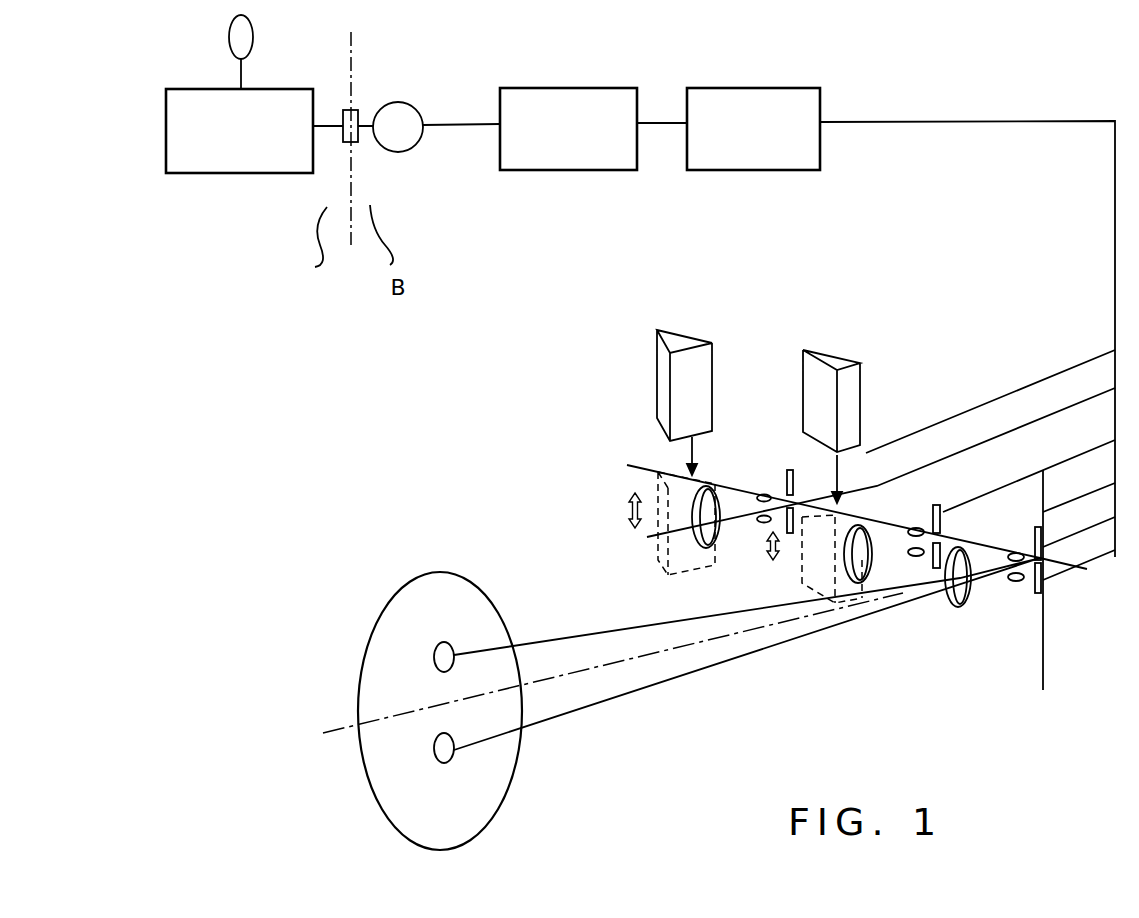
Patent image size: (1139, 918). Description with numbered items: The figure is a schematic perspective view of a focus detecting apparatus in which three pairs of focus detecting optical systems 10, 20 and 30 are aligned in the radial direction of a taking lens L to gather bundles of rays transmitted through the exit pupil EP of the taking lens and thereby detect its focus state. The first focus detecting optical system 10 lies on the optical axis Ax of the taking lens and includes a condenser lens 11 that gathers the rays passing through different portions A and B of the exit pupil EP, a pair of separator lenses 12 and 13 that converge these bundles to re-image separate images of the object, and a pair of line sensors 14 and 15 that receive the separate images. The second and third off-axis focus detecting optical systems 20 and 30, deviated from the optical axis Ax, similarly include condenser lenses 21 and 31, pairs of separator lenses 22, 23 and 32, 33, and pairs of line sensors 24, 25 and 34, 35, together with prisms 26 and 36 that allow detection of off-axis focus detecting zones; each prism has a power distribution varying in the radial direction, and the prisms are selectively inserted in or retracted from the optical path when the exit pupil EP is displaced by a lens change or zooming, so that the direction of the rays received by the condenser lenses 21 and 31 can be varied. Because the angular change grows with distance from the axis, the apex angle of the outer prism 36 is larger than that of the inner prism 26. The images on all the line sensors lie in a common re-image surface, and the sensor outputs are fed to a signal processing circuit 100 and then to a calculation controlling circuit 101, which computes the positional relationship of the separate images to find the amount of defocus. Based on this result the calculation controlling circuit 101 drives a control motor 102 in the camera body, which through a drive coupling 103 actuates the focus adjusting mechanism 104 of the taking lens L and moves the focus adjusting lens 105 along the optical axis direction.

The first focus detecting optical system 10 is at (1002, 612).
The condenser lens 11 is at (957, 605).
The separator lens 12 is at (1017, 551).
The separator lens 13 is at (1017, 583).
The line sensor 14 is at (1042, 537).
The line sensor 15 is at (1043, 585).
The second focus detecting optical system 20 is at (902, 555).
The condenser lens 21 is at (870, 524).
The separator lens 22 is at (917, 528).
The separator lens 23 is at (917, 557).
The line sensor 24 is at (941, 506).
The line sensor 25 is at (939, 556).
The prism 26 is at (860, 400).
The third focus detecting optical system 30 is at (738, 562).
The condenser lens 31 is at (712, 488).
The separator lens 32 is at (763, 495).
The separator lens 33 is at (763, 523).
The line sensor 34 is at (786, 480).
The line sensor 35 is at (787, 537).
The prism 36 is at (713, 387).
The signal processing circuit 100 is at (780, 170).
The calculation controlling circuit 101 is at (600, 170).
The control motor 102 is at (410, 150).
The drive coupling 103 is at (355, 110).
The focus adjusting mechanism 104 is at (267, 173).
The focus adjusting lens 105 is at (253, 37).
The taking lens L is at (317, 253).
The exit pupil EP is at (505, 782).
The optical axis Ax is at (772, 630).
The portion of the exit pupil A is at (433, 657).
The portion of the exit pupil B is at (433, 750).